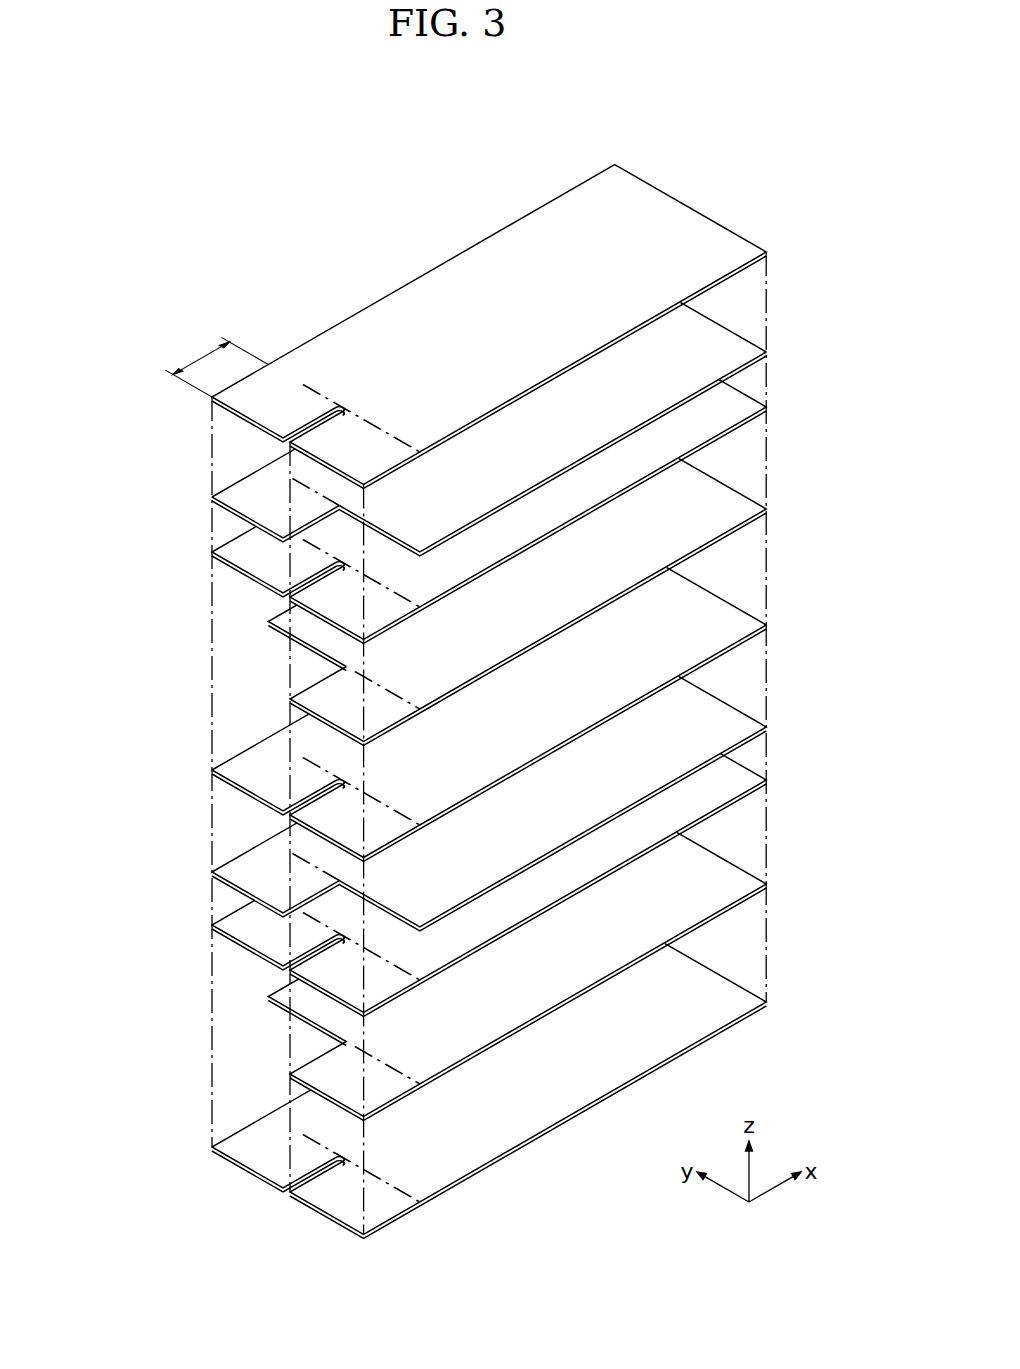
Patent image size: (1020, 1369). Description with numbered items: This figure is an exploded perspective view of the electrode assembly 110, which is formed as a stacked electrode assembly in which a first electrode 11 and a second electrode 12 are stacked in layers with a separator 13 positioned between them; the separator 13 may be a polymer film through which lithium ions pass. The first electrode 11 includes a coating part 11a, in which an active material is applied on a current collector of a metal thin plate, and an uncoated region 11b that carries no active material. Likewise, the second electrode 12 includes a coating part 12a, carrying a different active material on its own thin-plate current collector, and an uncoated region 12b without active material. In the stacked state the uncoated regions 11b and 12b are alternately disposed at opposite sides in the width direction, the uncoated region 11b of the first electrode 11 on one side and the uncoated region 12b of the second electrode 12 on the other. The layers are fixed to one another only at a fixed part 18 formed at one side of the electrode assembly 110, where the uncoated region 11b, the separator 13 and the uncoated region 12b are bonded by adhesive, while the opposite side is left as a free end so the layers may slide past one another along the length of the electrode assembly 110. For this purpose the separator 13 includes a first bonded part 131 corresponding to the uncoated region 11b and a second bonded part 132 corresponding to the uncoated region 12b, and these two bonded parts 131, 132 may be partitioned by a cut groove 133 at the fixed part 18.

The electrode assembly 110 is at (405, 135).
The fixed part 18 is at (216, 360).
The separator 13 is at (262, 403).
The second electrode 12 is at (118, 478).
The coating part 12a is at (393, 517).
The uncoated region 12b is at (256, 490).
The first bonded part 131 is at (354, 648).
The second bonded part 132 is at (256, 560).
The cut groove 133 is at (286, 598).
The first electrode 11 is at (118, 680).
The coating part 11a is at (343, 606).
The uncoated region 11b is at (313, 697).